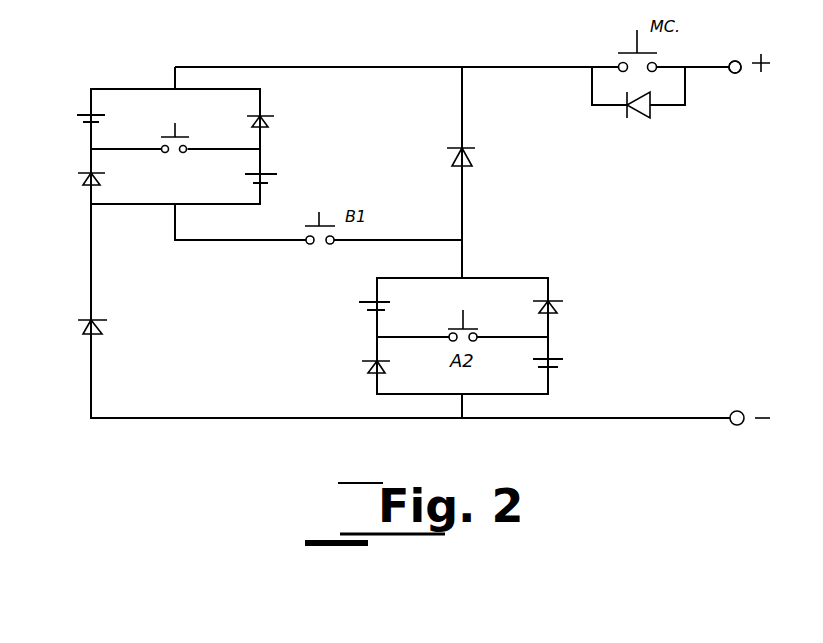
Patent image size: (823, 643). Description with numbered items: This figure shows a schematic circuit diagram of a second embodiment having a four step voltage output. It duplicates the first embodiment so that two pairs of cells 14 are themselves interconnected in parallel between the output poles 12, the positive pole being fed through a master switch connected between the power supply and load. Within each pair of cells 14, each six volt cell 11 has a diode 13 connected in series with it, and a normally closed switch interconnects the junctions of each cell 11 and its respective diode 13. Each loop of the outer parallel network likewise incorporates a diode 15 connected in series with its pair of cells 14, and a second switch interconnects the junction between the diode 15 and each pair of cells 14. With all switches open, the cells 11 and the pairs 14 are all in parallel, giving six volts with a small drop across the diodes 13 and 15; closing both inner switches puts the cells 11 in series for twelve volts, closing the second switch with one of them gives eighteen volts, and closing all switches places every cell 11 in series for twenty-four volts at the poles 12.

The cell 11 is at (75, 120).
The output pole 12 is at (737, 60).
The diode 13 is at (78, 181).
The pair of cells 14 is at (224, 80).
The diode 15 is at (478, 155).